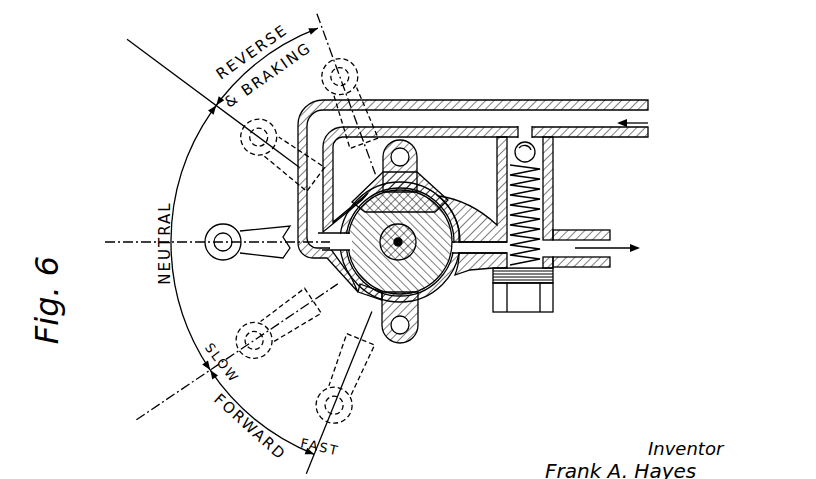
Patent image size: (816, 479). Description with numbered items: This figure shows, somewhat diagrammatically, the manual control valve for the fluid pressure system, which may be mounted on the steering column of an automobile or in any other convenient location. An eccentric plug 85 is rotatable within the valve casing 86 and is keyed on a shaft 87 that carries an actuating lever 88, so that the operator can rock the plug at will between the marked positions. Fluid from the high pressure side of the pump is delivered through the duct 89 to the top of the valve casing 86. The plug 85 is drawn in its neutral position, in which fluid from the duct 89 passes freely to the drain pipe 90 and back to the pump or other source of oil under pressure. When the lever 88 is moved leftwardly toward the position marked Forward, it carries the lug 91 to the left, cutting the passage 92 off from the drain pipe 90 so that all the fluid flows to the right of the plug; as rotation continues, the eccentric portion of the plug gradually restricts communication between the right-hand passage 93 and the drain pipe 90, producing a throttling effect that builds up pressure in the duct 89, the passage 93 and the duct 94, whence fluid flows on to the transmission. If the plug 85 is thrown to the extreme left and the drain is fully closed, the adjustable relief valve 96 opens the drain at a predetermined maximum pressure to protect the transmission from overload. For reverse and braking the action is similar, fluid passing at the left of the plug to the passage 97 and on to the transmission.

The eccentric plug 85 is at (452, 287).
The valve casing 86 is at (340, 290).
The shaft 87 is at (372, 262).
The actuating lever 88 is at (226, 226).
The duct 89 is at (577, 120).
The drain pipe 90 is at (580, 255).
The lug 91 is at (236, 345).
The passage 92 is at (372, 316).
The right-hand passage 93 is at (372, 200).
The duct 94 is at (406, 157).
The adjustable relief valve 96 is at (557, 145).
The passage 97 is at (410, 327).